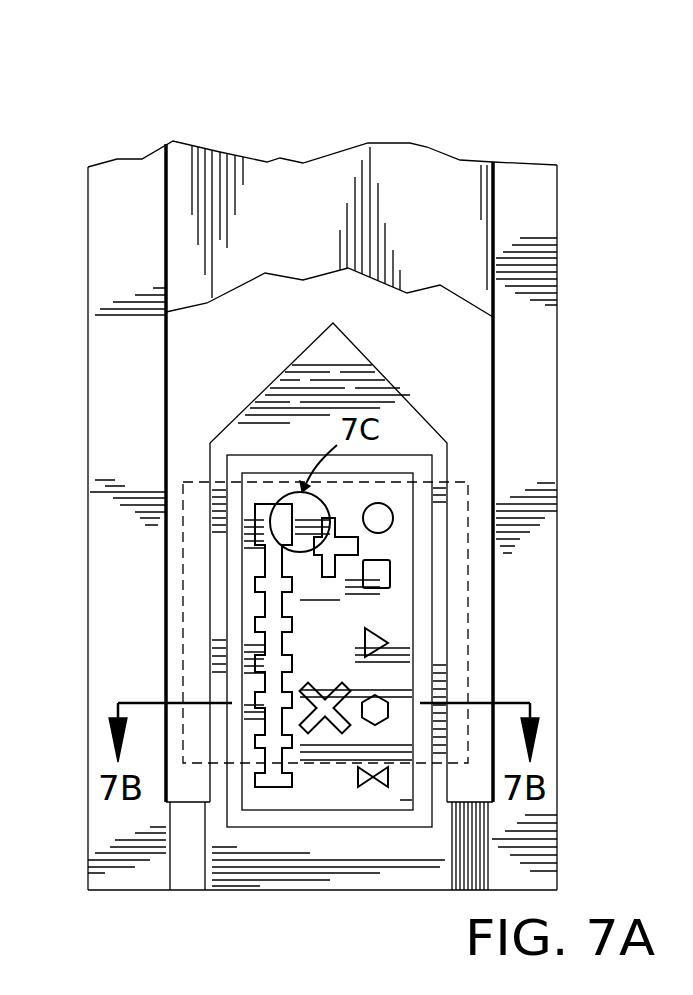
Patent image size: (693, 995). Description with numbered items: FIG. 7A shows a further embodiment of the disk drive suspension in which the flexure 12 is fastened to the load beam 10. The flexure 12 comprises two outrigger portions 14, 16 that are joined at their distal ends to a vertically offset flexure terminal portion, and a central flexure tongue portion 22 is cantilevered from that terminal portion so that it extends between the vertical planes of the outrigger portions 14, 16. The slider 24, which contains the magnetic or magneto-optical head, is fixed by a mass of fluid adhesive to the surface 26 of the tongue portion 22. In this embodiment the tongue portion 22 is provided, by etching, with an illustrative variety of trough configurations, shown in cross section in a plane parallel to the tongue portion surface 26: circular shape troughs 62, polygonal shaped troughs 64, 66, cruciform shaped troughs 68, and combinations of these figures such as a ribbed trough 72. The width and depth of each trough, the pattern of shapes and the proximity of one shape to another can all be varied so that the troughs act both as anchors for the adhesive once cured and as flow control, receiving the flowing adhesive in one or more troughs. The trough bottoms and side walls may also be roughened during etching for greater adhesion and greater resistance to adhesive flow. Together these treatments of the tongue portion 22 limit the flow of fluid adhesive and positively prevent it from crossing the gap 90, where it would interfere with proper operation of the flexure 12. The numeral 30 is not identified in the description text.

The load beam 10 is at (428, 175).
The flexure 12 is at (590, 330).
The outrigger portion 14 is at (110, 198).
The outrigger portion 16 is at (530, 220).
The flexure tongue portion 22 is at (328, 357).
The slider 24 is at (458, 660).
The tongue portion surface 26 is at (440, 505).
The circuit board 30 is at (337, 622).
The circular shape troughs 62 is at (392, 508).
The polygonal shaped troughs 64 is at (385, 643).
The polygonal shaped troughs 66 is at (388, 720).
The cruciform shaped troughs 68 is at (340, 525).
The ribbed trough 72 is at (272, 583).
The gap 90 is at (483, 542).